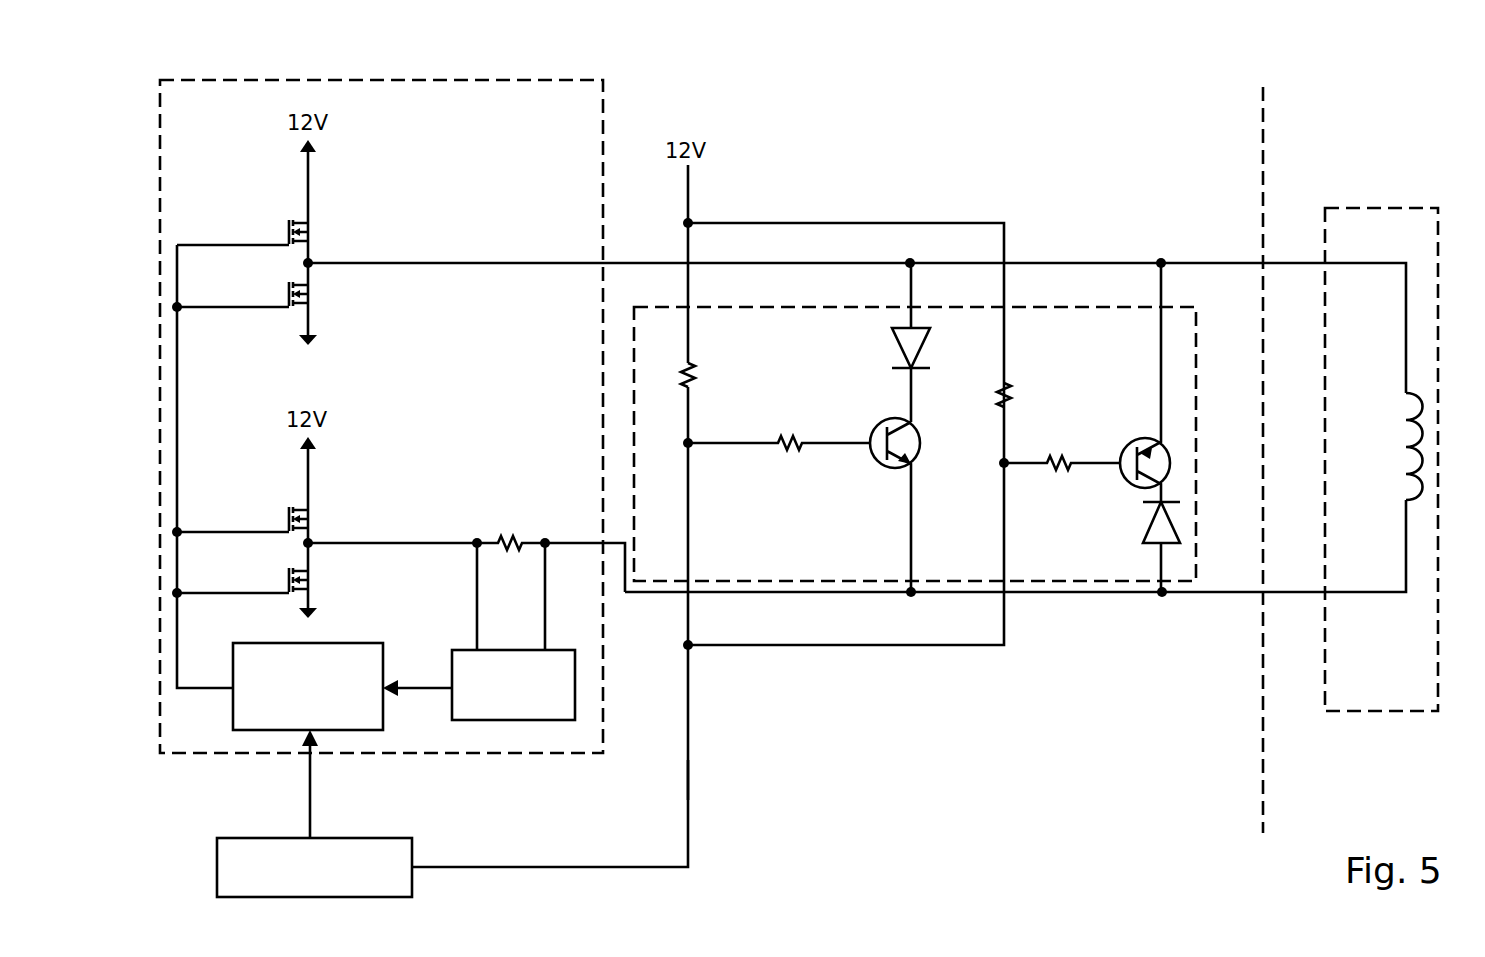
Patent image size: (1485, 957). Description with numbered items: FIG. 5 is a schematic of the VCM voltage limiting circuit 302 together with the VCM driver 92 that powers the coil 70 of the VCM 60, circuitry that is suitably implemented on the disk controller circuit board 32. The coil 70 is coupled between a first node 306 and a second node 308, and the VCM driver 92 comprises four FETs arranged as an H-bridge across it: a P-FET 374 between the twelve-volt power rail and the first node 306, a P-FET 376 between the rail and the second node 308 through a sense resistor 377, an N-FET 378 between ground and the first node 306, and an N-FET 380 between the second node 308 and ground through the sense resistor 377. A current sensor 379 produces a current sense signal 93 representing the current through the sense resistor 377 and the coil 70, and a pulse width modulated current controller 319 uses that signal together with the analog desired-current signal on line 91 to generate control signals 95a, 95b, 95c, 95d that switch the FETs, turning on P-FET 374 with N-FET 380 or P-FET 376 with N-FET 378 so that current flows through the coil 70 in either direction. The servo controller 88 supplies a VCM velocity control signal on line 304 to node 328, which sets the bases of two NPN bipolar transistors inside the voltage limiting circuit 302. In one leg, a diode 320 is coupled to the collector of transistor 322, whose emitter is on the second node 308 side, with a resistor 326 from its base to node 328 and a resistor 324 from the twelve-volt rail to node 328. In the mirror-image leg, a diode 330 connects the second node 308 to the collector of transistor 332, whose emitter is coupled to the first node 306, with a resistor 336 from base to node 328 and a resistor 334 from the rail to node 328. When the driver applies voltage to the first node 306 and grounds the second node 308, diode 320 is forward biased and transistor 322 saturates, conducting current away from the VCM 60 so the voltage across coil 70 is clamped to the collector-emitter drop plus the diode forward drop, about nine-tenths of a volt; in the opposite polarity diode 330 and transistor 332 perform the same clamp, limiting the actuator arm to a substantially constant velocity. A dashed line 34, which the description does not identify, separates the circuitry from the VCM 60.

The VCM driver 92 is at (605, 103).
The P-FET 374 is at (294, 218).
The N-FET 378 is at (295, 289).
The P-FET 376 is at (289, 505).
The N-FET 380 is at (295, 573).
The control signal 95a is at (223, 245).
The control signal 95b is at (237, 307).
The control signal 95c is at (232, 532).
The control signal 95d is at (237, 592).
The pulse width modulated current controller 319 is at (270, 628).
The current sensor 379 is at (452, 662).
The current sense signal 93 is at (406, 691).
The line 91 is at (313, 805).
The servo controller 88 is at (217, 873).
The sense resistor 377 is at (516, 524).
The first node 306 is at (1161, 258).
The second node 308 is at (1163, 597).
The node 328 is at (683, 646).
The line 304 is at (690, 785).
The VCM voltage limiting circuit 302 is at (1104, 290).
The resistor 324 is at (684, 378).
The resistor 326 is at (786, 453).
The diode 320 is at (924, 351).
The NPN bipolar transistor 322 is at (887, 420).
The resistor 334 is at (1009, 398).
The resistor 336 is at (1056, 472).
The NPN bipolar transistor 332 is at (1138, 440).
The diode 330 is at (1147, 531).
The disk controller circuit board 32 is at (1120, 128).
The boundary 34 is at (1293, 148).
The VCM 60 is at (1377, 208).
The coil 70 is at (1431, 459).